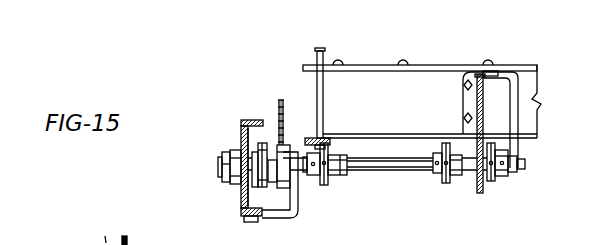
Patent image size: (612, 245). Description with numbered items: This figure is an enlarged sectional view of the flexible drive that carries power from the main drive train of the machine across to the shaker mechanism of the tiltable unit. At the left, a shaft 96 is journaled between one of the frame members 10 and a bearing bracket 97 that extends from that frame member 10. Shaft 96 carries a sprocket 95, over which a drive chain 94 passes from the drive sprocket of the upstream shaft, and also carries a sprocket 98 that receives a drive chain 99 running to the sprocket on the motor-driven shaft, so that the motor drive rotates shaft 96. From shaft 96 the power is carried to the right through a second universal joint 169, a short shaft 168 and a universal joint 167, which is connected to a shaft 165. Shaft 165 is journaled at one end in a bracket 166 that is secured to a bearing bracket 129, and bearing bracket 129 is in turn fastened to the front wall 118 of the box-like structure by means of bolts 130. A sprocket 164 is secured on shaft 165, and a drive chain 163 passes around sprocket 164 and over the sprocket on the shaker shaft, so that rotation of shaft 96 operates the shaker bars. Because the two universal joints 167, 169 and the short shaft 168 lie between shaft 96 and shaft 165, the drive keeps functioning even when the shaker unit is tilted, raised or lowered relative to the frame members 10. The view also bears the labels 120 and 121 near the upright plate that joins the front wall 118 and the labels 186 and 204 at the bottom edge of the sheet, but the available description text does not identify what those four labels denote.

The frame member 10 is at (244, 118).
The drive chain 94 is at (279, 112).
The sprocket 95 is at (279, 190).
The shaft 96 is at (218, 162).
The bearing bracket 97 is at (300, 196).
The sprocket 98 is at (267, 190).
The drive chain 99 is at (241, 128).
The front wall 118 is at (418, 72).
The bracket plate 120 is at (317, 92).
The bracket flange 121 is at (317, 50).
The bearing bracket 129 is at (540, 103).
The bolts 130 is at (464, 117).
The drive chain 163 is at (493, 190).
The sprocket 164 is at (497, 178).
The shaft 165 is at (523, 164).
The bracket 166 is at (516, 152).
The universal joint 167 is at (457, 183).
The short shaft 168 is at (421, 172).
The second universal joint 169 is at (333, 175).
The member 186 is at (89, 235).
The member 204 is at (133, 243).